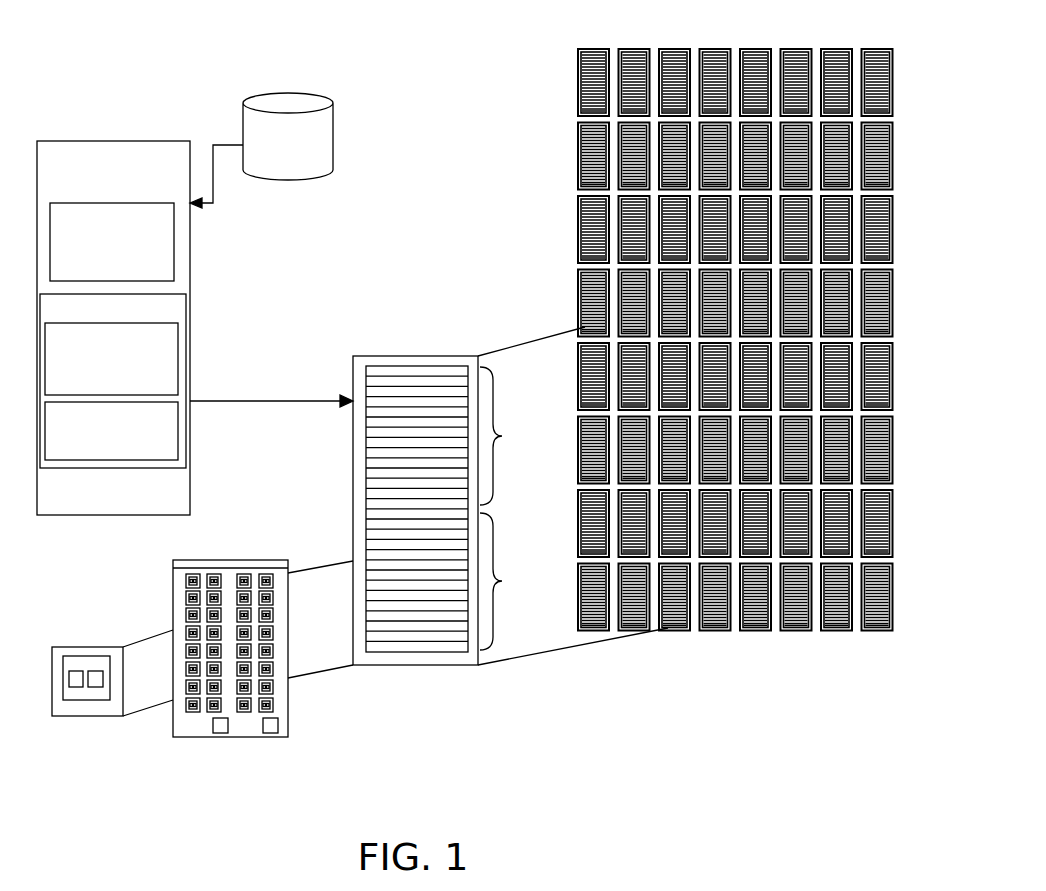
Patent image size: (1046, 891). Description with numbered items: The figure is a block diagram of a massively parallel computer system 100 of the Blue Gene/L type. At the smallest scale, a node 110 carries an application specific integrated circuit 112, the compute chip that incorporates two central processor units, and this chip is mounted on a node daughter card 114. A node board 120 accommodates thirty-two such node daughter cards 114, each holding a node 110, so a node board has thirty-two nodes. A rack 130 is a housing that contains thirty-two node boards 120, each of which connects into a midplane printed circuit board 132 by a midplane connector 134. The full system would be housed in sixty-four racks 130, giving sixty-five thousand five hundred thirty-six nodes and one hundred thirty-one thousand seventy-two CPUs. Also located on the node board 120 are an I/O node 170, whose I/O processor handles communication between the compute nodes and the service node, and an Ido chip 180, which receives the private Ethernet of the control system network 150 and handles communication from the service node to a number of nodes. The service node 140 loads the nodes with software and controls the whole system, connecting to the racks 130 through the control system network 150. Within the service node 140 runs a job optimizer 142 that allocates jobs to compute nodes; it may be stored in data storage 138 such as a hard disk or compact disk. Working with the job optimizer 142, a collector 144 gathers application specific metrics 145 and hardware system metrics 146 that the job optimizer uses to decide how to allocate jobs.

The massively parallel computer system 100 is at (162, 66).
The node 110 is at (67, 647).
The application specific integrated circuit 112 is at (65, 700).
The node daughter card 114 is at (97, 717).
The node board 120 is at (288, 615).
The rack 130 is at (393, 356).
The midplane printed circuit board 132 is at (528, 508).
The midplane connector 134 is at (173, 563).
The data storage 138 is at (333, 118).
The service node 140 is at (99, 183).
The job optimizer 142 is at (127, 278).
The collector 144 is at (190, 305).
The application specific metrics 145 is at (178, 337).
The hardware system metrics 146 is at (178, 450).
The control system network 150 is at (305, 401).
The I/O node 170 is at (220, 733).
The Ido chip 180 is at (278, 733).